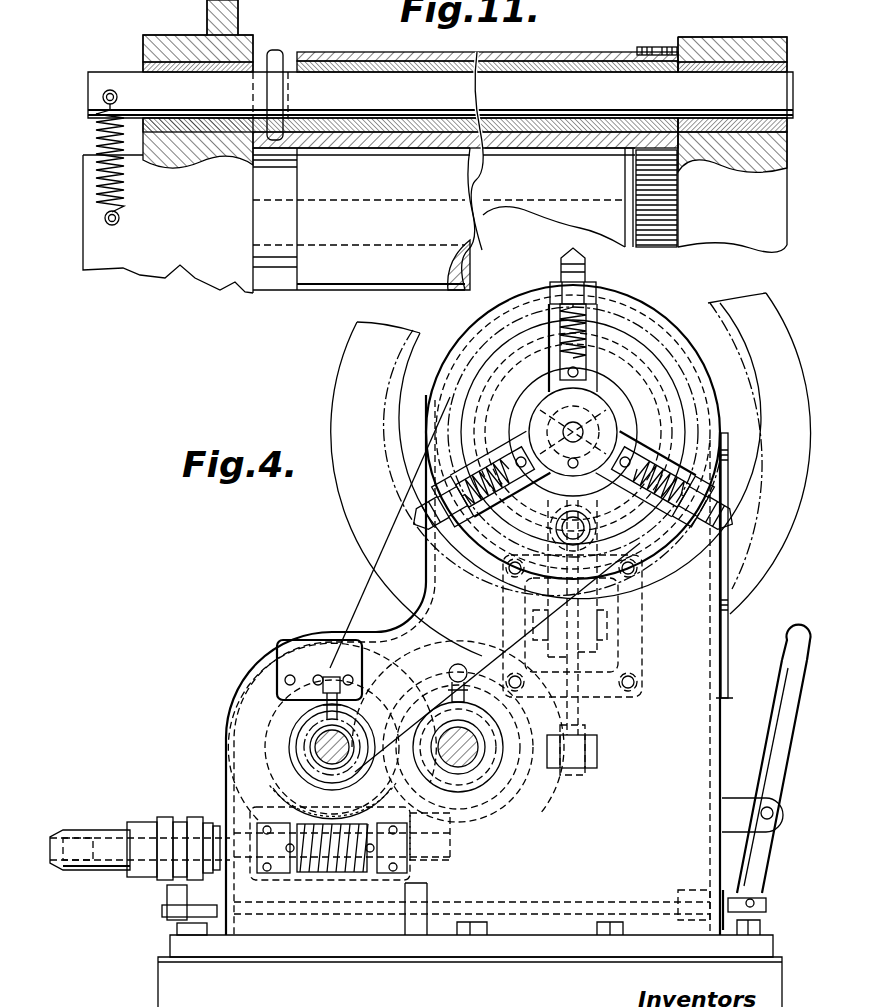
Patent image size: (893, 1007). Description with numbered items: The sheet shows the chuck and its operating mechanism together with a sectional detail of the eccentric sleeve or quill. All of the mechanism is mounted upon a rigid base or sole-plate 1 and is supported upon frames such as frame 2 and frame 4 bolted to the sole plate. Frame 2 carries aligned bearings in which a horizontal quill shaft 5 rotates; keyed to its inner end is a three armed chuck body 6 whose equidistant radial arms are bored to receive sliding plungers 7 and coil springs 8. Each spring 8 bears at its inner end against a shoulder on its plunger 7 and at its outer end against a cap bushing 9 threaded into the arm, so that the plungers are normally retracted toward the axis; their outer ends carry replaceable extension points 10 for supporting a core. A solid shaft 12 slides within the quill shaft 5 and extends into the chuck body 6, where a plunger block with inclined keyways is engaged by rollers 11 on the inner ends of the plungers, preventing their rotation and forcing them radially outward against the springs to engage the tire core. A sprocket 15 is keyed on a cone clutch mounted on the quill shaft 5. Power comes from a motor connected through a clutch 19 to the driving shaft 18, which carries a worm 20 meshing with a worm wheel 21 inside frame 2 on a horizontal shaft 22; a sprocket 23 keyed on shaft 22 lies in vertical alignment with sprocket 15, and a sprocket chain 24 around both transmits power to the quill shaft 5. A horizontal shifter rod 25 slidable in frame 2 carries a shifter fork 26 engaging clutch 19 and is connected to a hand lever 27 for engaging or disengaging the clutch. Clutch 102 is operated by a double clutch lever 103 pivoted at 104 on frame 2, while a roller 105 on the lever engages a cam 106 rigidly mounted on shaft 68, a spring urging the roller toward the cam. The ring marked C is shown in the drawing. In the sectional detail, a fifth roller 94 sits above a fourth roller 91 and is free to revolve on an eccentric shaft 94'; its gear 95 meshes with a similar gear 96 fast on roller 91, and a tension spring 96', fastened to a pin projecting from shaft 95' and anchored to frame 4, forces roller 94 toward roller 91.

In FIG. 4, the base or sole-plate 1 is at (167, 988).
In FIG. 4, the supporting frame 2 is at (243, 678).
In FIG. 11, the supporting frame 4 is at (188, 253).
In FIG. 4, the quill shaft 5 is at (480, 345).
In FIG. 4, the chuck body 6 is at (532, 407).
In FIG. 4, the plunger 7 is at (543, 470).
In FIG. 4, the coil spring 8 is at (470, 462).
In FIG. 4, the cap bushing 9 is at (440, 494).
In FIG. 4, the extension point 10 is at (583, 262).
In FIG. 4, the roller 11 is at (628, 312).
In FIG. 4, the solid shaft 12 is at (658, 322).
In FIG. 4, the sprocket 15 is at (500, 537).
In FIG. 4, the driving shaft 18 is at (112, 838).
In FIG. 4, the clutch 19 is at (193, 822).
In FIG. 4, the worm 20 is at (318, 872).
In FIG. 4, the worm wheel 21 is at (250, 778).
In FIG. 4, the horizontal shaft 22 is at (318, 745).
In FIG. 4, the sprocket 23 is at (298, 715).
In FIG. 4, the sprocket chain 24 is at (365, 596).
In FIG. 4, the shifter rod 25 is at (625, 910).
In FIG. 4, the shifter fork 26 is at (167, 893).
In FIG. 4, the hand lever 27 is at (777, 740).
In FIG. 4, the shaft 68 is at (480, 760).
In FIG. 11, the fourth roller 91 is at (455, 213).
In FIG. 11, the fifth roller 94 is at (410, 139).
In FIG. 11, the eccentric shaft 94' is at (307, 85).
In FIG. 11, the gear 95 is at (657, 33).
In FIG. 11, the shaft 95' is at (440, 95).
In FIG. 11, the gear 96 is at (680, 198).
In FIG. 11, the tension spring 96' is at (139, 157).
In FIG. 4, the clutch 102 is at (509, 584).
In FIG. 4, the double clutch lever 103 is at (615, 565).
In FIG. 4, the pivot 104 is at (615, 640).
In FIG. 4, the roller 105 is at (585, 762).
In FIG. 4, the cam 106 is at (518, 835).
In FIG. 4, the cam ring C is at (345, 370).